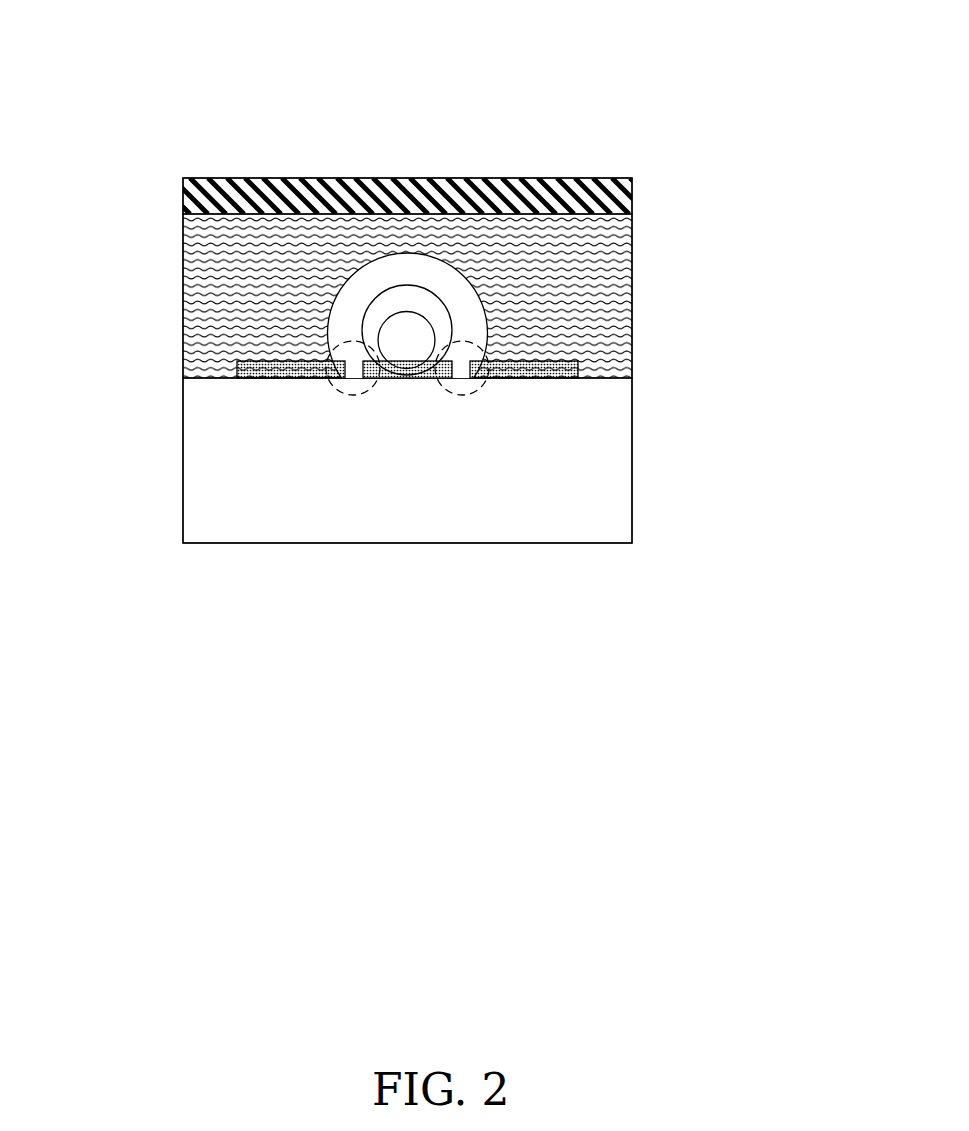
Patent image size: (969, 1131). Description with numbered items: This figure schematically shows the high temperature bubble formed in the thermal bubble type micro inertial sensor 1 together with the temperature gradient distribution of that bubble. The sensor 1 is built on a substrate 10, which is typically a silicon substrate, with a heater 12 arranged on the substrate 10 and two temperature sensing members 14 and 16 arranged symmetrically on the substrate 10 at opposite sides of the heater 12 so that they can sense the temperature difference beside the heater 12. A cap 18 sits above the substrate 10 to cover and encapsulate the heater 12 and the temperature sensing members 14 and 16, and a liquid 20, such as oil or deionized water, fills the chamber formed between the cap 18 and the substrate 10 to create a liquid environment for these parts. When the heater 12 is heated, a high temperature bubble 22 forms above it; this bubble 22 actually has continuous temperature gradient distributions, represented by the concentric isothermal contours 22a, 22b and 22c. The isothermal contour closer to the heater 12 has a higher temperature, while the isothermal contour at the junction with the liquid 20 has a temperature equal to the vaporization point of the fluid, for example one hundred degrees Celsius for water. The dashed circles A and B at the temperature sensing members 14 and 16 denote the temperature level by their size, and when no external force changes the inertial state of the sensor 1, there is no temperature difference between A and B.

The thermal bubble type micro inertial sensor 1 is at (648, 146).
The substrate 10 is at (441, 518).
The heater 12 is at (407, 368).
The temperature sensing member 14 is at (563, 375).
The temperature sensing member 16 is at (265, 373).
The cap 18 is at (205, 205).
The liquid 20 is at (213, 308).
The high temperature bubble 22 is at (605, 311).
The isothermal contour 22a is at (433, 325).
The isothermal contour 22b is at (446, 307).
The isothermal contour 22c is at (467, 270).
The temperature region A is at (472, 392).
The temperature region B is at (340, 395).